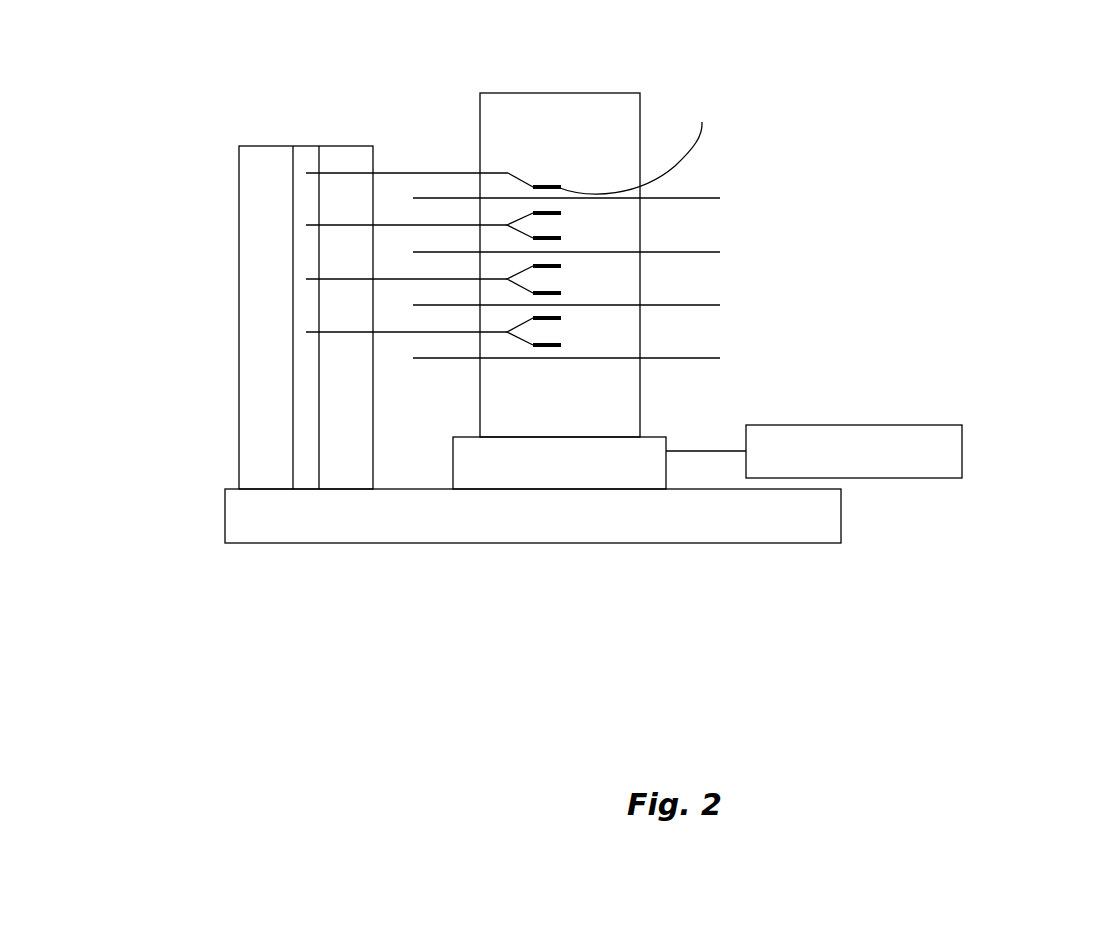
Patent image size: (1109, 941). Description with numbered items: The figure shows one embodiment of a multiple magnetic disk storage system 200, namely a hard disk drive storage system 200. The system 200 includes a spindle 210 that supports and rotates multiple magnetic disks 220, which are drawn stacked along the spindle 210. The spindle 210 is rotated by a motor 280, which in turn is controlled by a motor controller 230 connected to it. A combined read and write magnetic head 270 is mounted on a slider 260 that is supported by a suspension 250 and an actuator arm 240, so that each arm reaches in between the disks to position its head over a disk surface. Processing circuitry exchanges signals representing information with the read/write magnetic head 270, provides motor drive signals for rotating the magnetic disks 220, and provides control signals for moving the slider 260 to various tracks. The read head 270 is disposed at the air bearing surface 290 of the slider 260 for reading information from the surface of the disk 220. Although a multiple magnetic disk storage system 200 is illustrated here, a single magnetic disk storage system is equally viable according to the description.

The magnetic disk storage system 200 is at (105, 622).
The spindle 210 is at (627, 92).
The magnetic disks 220 is at (680, 199).
The motor controller 230 is at (883, 425).
The actuator arm 240 is at (425, 171).
The suspension 250 is at (520, 172).
The slider 260 is at (547, 186).
The read and write magnetic head 270 is at (560, 346).
The motor 280 is at (653, 437).
The air bearing surface 290 is at (638, 146).